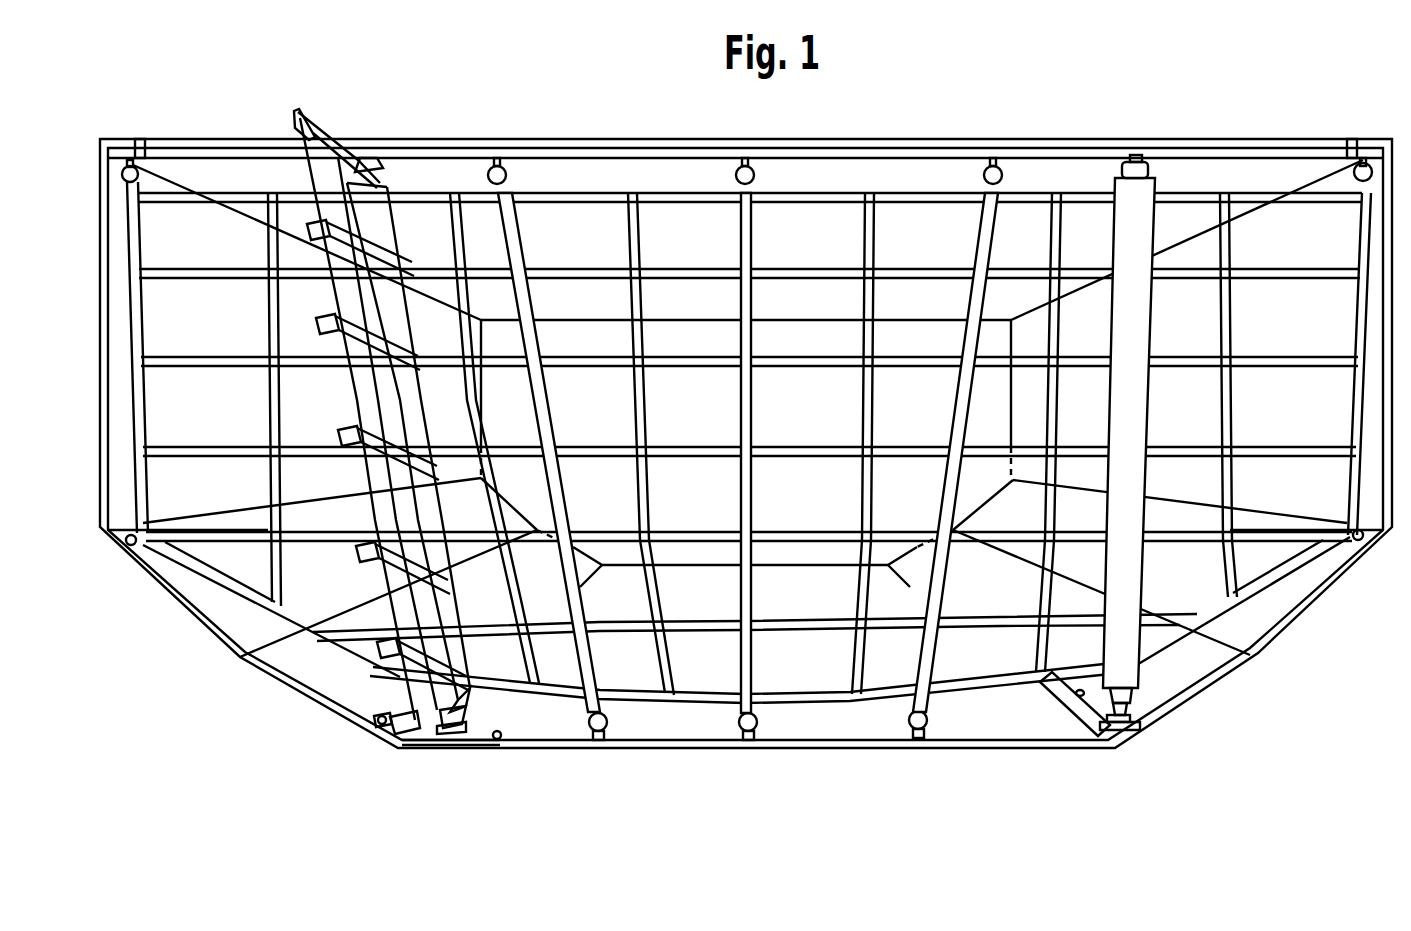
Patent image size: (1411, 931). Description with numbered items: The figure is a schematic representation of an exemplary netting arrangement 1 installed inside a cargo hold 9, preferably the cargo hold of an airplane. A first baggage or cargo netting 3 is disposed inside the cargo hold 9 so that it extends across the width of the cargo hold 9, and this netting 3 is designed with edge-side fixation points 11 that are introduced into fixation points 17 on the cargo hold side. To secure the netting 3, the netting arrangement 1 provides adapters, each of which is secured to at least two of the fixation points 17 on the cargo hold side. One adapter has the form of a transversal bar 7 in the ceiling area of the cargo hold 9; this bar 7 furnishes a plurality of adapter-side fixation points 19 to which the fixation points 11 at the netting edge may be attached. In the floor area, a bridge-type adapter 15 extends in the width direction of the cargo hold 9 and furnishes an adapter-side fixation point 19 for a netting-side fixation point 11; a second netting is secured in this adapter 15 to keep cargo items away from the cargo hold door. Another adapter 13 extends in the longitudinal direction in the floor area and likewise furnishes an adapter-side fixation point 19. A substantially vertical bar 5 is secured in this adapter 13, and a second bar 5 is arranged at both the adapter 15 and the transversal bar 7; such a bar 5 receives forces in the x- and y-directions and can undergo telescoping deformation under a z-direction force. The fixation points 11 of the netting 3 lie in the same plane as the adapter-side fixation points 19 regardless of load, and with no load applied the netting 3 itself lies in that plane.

The netting arrangement 1 is at (918, 122).
The baggage or cargo netting 3 is at (1280, 530).
The substantially vertical bar 5 is at (372, 182).
The transversal bar 7 is at (580, 150).
The cargo hold 9 is at (553, 722).
The edge-side fixation points 11 is at (733, 725).
The adapter 13 is at (1095, 705).
The bridge-type adapter 15 is at (427, 735).
The fixation points on the cargo hold side 17 is at (496, 740).
The adapter-side fixation points 19 is at (1120, 735).